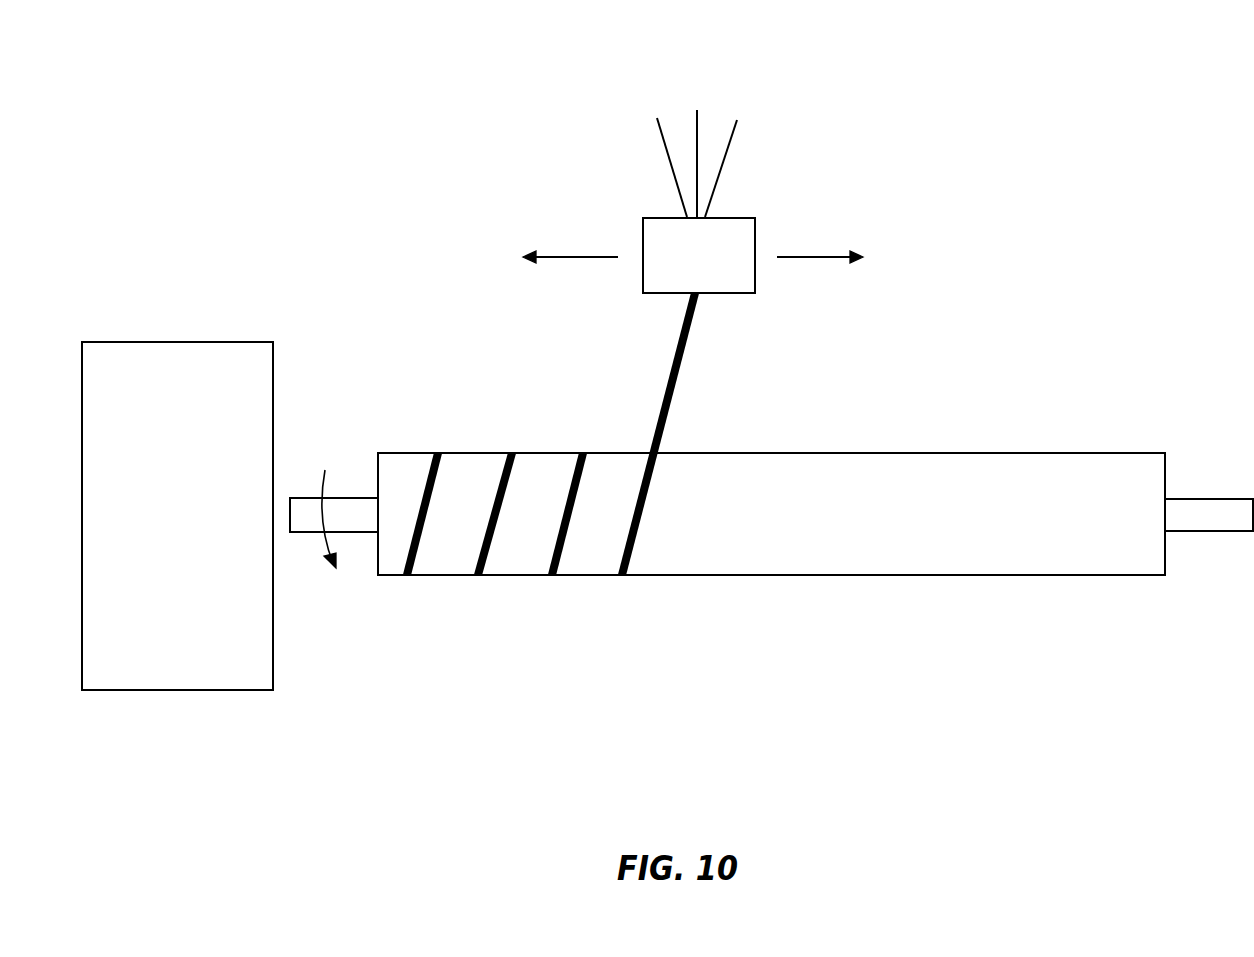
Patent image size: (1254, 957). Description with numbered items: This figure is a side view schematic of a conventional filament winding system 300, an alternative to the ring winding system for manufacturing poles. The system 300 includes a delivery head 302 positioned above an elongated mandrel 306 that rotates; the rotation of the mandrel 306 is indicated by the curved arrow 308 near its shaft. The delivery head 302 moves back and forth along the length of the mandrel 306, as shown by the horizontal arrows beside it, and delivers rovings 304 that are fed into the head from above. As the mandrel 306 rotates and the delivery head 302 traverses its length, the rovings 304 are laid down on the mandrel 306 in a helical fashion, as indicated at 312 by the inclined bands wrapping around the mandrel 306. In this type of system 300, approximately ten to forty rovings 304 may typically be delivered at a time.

The conventional filament winding system 300 is at (1051, 75).
The delivery head 302 is at (653, 277).
The rovings 304 is at (700, 128).
The mandrel 306 is at (875, 529).
The rotation direction 308 is at (330, 477).
The helical fashion 312 is at (658, 415).